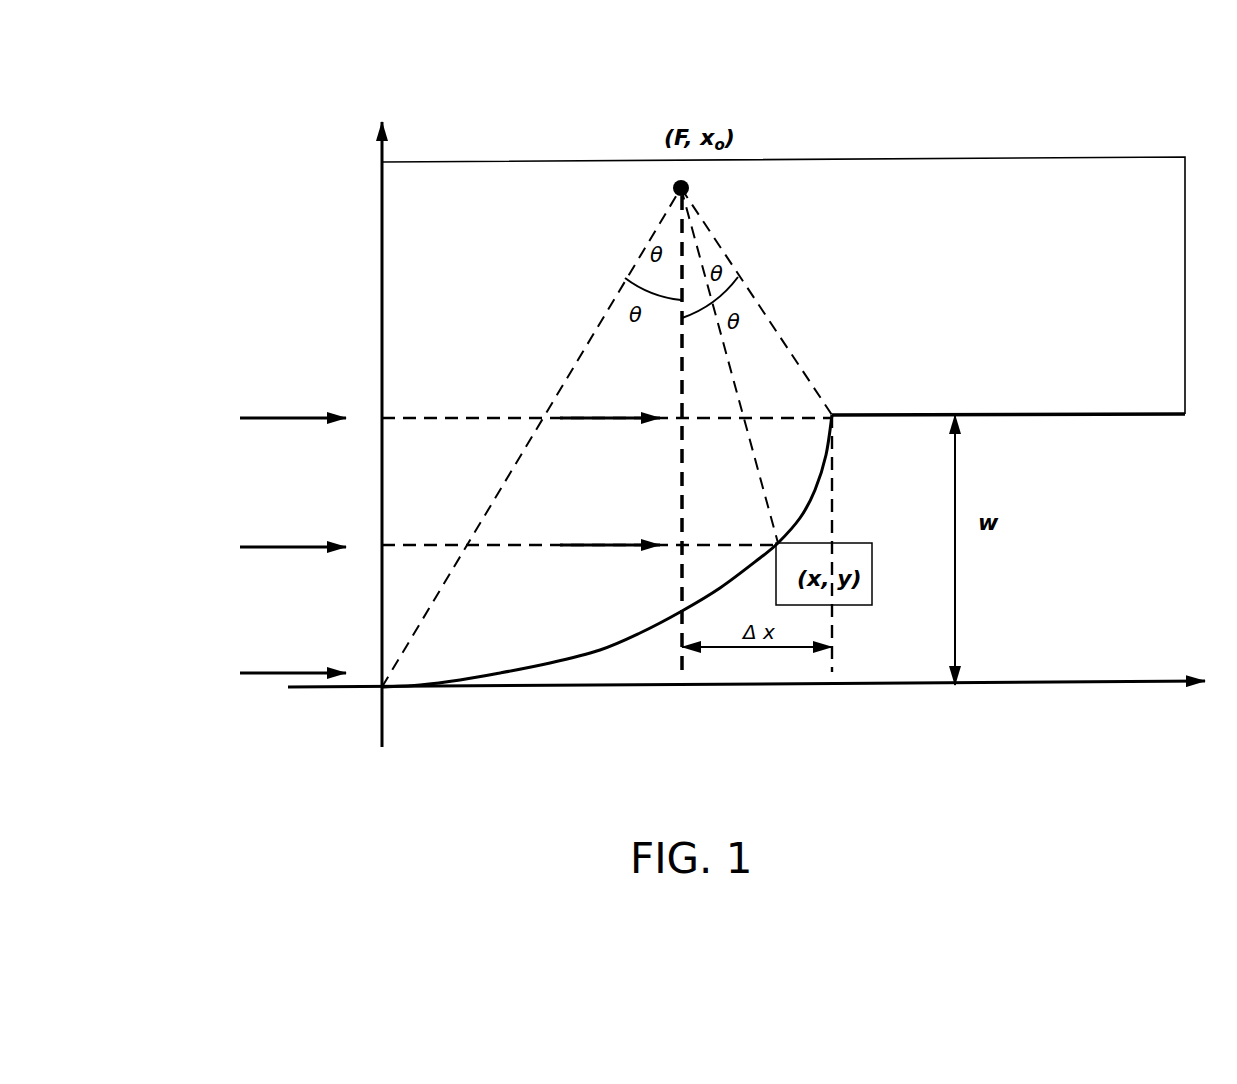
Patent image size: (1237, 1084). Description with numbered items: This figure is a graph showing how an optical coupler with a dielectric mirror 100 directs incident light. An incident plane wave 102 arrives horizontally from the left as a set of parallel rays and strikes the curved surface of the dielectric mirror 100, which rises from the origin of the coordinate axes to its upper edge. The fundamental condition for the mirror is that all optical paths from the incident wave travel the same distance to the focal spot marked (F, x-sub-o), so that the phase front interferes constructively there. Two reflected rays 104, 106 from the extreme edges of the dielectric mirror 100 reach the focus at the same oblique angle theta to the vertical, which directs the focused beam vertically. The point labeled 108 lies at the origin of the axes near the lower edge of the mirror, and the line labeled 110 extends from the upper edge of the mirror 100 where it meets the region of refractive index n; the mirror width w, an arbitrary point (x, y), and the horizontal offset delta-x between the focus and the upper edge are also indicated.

The dielectric mirror 100 is at (805, 507).
The plane wave 102 is at (288, 416).
The reflected ray 104 is at (433, 605).
The reflected ray 106 is at (757, 302).
The origin / coordinate axes 108 is at (386, 683).
The lens body of refractive index n 110 is at (832, 415).